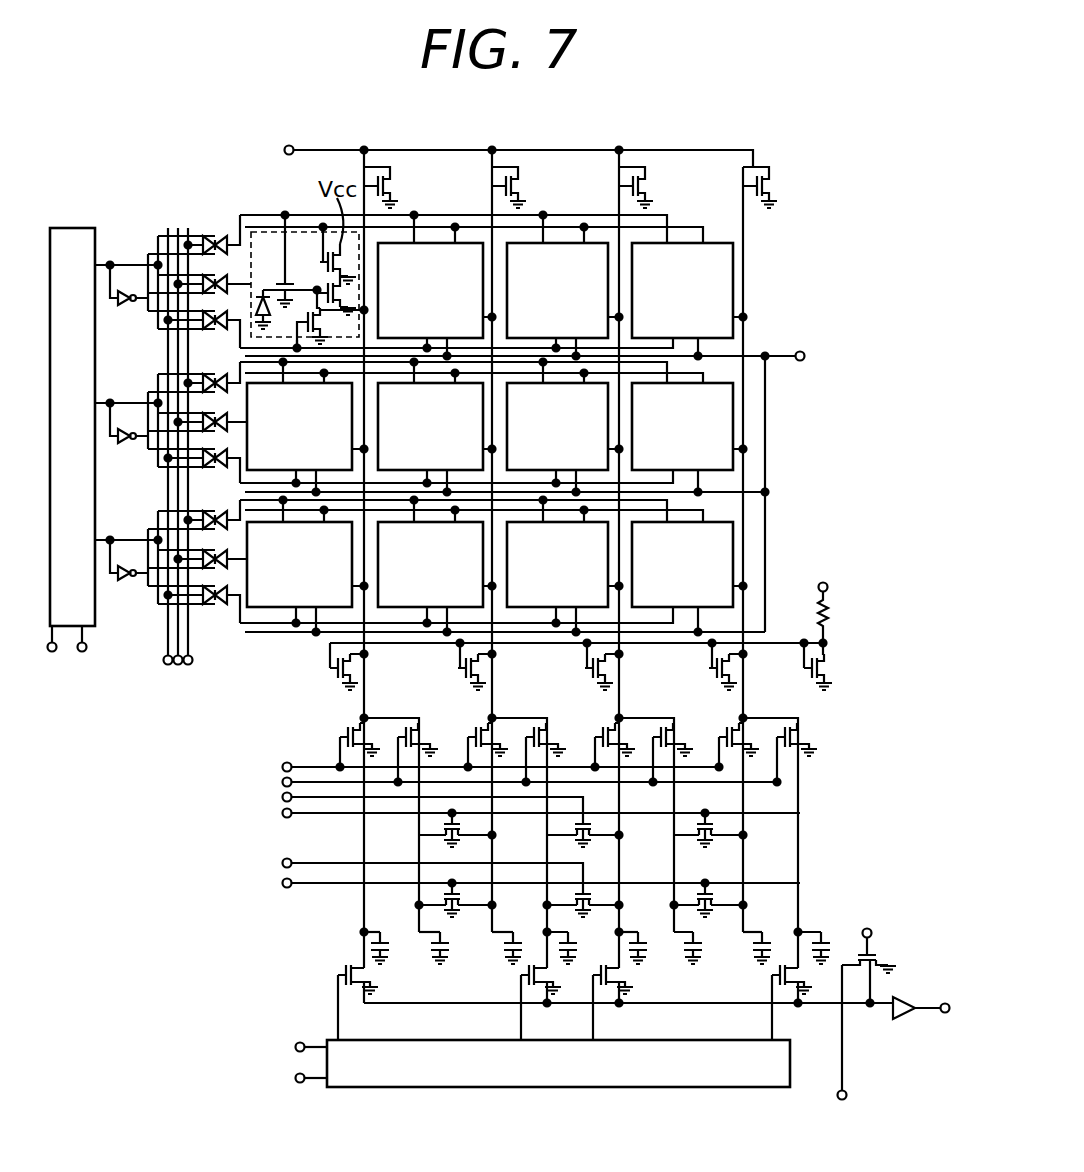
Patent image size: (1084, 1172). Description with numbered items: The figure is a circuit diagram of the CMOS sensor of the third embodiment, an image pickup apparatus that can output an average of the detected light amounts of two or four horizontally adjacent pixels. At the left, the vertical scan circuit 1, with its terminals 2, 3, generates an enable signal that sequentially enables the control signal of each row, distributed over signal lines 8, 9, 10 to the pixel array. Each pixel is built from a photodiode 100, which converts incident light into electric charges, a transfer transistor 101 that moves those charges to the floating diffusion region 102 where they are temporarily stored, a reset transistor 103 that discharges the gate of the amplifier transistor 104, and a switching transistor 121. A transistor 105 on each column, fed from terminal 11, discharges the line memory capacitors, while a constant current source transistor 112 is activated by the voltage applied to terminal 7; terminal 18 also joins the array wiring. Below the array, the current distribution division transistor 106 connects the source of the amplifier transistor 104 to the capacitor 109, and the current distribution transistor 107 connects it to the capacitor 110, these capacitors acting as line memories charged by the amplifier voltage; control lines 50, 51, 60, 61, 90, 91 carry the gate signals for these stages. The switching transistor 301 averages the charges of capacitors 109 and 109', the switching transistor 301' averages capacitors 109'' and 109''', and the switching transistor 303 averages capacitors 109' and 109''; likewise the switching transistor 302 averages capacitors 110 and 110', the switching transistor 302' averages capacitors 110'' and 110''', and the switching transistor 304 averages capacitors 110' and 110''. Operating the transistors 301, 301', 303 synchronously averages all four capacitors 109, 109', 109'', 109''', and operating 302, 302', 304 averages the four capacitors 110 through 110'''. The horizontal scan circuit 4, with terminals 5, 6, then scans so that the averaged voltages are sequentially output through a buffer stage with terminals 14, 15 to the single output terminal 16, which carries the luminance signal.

The vertical scan circuit 1 is at (82, 228).
The input terminal 2 is at (52, 652).
The input terminal 3 is at (82, 652).
The horizontal scan circuit 4 is at (605, 1089).
The input terminal 5 is at (297, 1044).
The input terminal 6 is at (296, 1078).
The terminal 7 is at (826, 583).
The signal line 8 is at (168, 665).
The signal line 9 is at (178, 665).
The signal line 10 is at (188, 665).
The power supply terminal line 11 is at (286, 147).
The reset terminal 14 is at (869, 929).
The terminal 15 is at (847, 1095).
The output terminal 16 is at (945, 1003).
The terminal 18 is at (803, 352).
The control line 50 is at (286, 762).
The control line 51 is at (283, 782).
The control line 60 is at (283, 816).
The control line 61 is at (283, 886).
The control line 90 is at (283, 797).
The control line 91 is at (283, 863).
The photodiode 100 is at (254, 300).
The transfer transistor 101 is at (283, 280).
The floating diffusion region 102 is at (297, 352).
The reset transistor 103 is at (337, 323).
The amplifier transistor 104 is at (350, 286).
The transistor 105 is at (400, 178).
The current distribution division transistor 106 is at (349, 737).
The current distribution transistor 107 is at (411, 737).
The capacitor 109 is at (328, 948).
The capacitor 109' is at (476, 1006).
The capacitor 109'' is at (625, 1006).
The capacitor 109''' is at (739, 987).
The capacitor 110 is at (388, 997).
The capacitor 110' is at (547, 1008).
The capacitor 110'' is at (655, 1008).
The capacitor 110''' is at (821, 954).
The constant current source transistor 112 is at (334, 679).
The switching transistor 121 is at (345, 264).
The switching transistor 301 is at (400, 837).
The switching transistor 301' is at (760, 817).
The switching transistor 302 is at (400, 904).
The switching transistor 302' is at (732, 884).
The switching transistor 303 is at (598, 828).
The switching transistor 304 is at (595, 895).